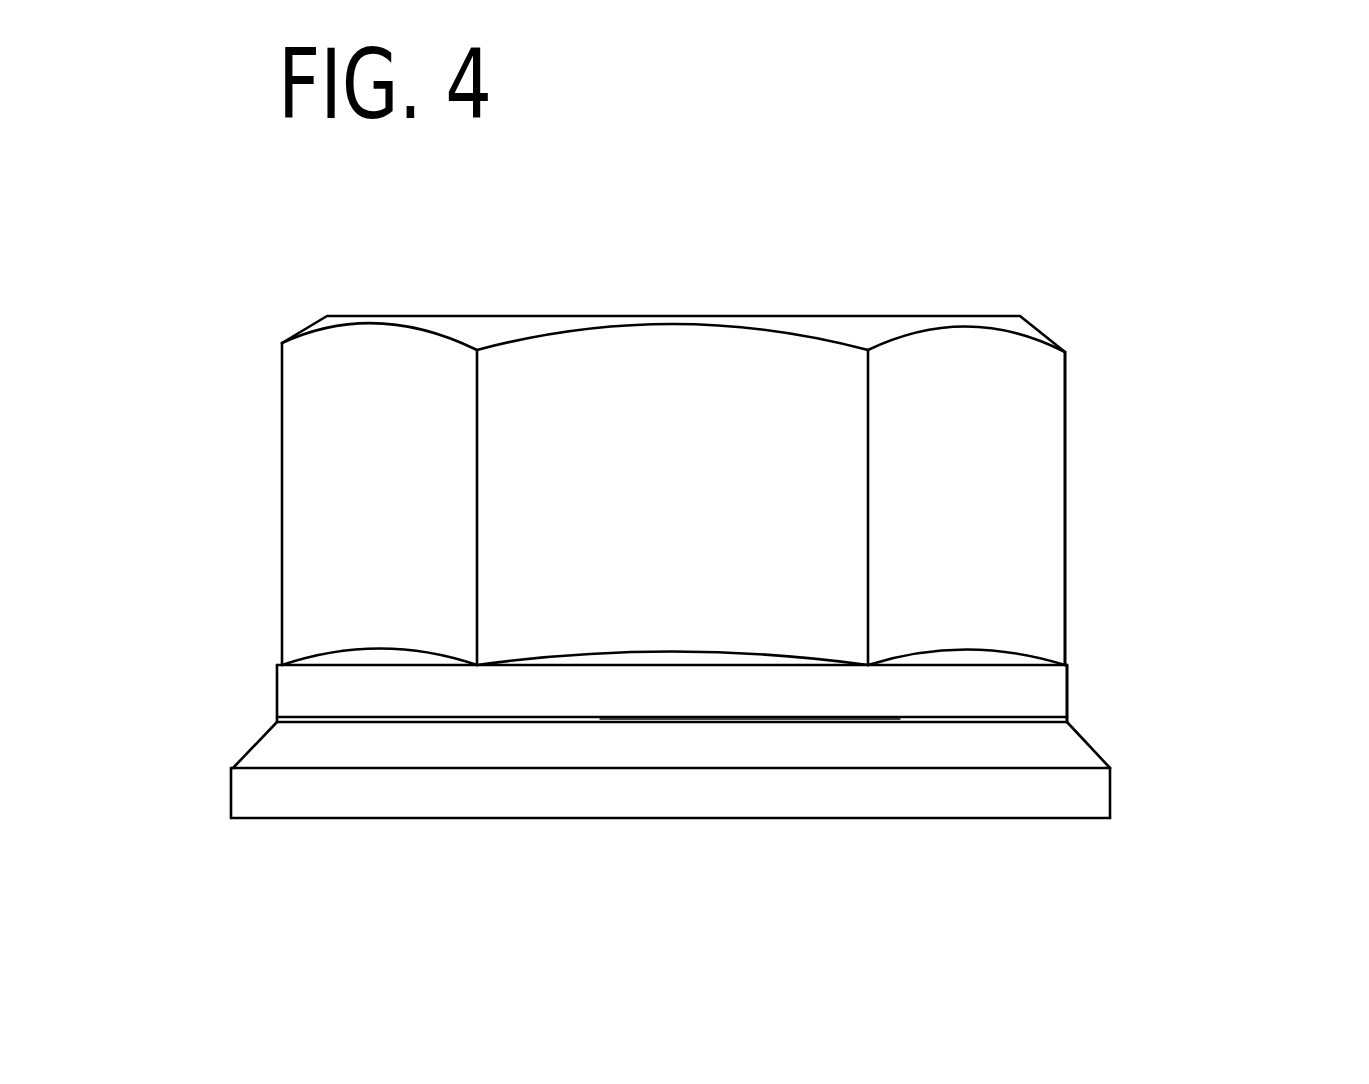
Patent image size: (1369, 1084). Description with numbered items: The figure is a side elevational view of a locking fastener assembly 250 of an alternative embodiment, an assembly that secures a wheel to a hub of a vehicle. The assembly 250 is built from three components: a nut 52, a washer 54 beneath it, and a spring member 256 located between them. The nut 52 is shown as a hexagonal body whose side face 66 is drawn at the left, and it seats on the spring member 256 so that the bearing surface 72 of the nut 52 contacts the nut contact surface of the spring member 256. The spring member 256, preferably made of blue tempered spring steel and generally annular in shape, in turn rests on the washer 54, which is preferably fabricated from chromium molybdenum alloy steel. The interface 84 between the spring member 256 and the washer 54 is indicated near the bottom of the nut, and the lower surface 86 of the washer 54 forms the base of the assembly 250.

The nut 52 is at (1088, 352).
The side face of nut 66 is at (262, 437).
The locking fastener assembly 250 is at (1132, 567).
The spring member 256 is at (1088, 721).
The bearing surface 72 is at (612, 719).
The contact interface 84 is at (742, 708).
The washer 54 is at (1132, 792).
The bottom surface of plate 86 is at (435, 818).